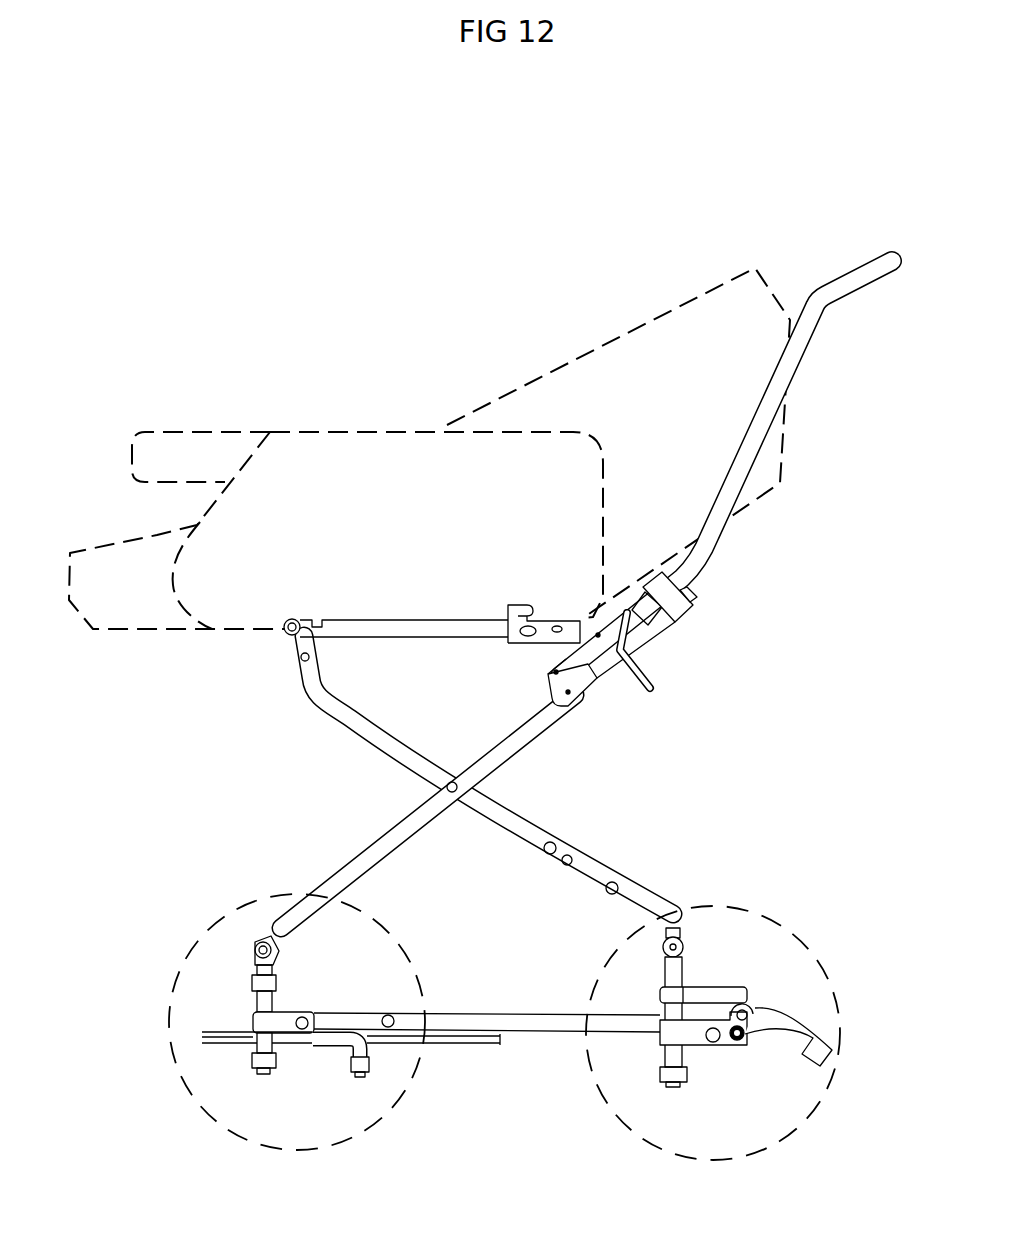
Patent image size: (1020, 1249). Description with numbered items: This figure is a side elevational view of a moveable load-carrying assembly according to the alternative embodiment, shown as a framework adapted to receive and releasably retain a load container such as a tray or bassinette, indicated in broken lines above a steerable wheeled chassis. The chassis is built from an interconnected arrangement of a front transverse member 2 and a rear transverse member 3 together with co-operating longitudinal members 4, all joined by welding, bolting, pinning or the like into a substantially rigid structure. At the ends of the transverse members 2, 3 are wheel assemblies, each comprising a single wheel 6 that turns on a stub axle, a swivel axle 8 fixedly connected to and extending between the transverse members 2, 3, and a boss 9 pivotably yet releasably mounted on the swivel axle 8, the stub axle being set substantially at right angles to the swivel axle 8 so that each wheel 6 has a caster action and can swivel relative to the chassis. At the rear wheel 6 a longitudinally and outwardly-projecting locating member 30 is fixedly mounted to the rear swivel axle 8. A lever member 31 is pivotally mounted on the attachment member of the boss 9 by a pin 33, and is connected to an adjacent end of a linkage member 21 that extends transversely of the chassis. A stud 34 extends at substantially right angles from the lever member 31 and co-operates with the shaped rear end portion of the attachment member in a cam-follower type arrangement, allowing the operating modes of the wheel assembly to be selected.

The front transverse member 2 is at (257, 1063).
The rear transverse member 3 is at (666, 1083).
The longitudinal member 4 is at (535, 1035).
The wheel 6 is at (180, 1070).
The swivel axle 8 is at (260, 1002).
The boss 9 is at (280, 1025).
The linkage member 21 is at (823, 1060).
The locating member 30 is at (713, 997).
The lever member 31 is at (782, 1013).
The pin 33 is at (755, 1008).
The stud 34 is at (742, 1035).